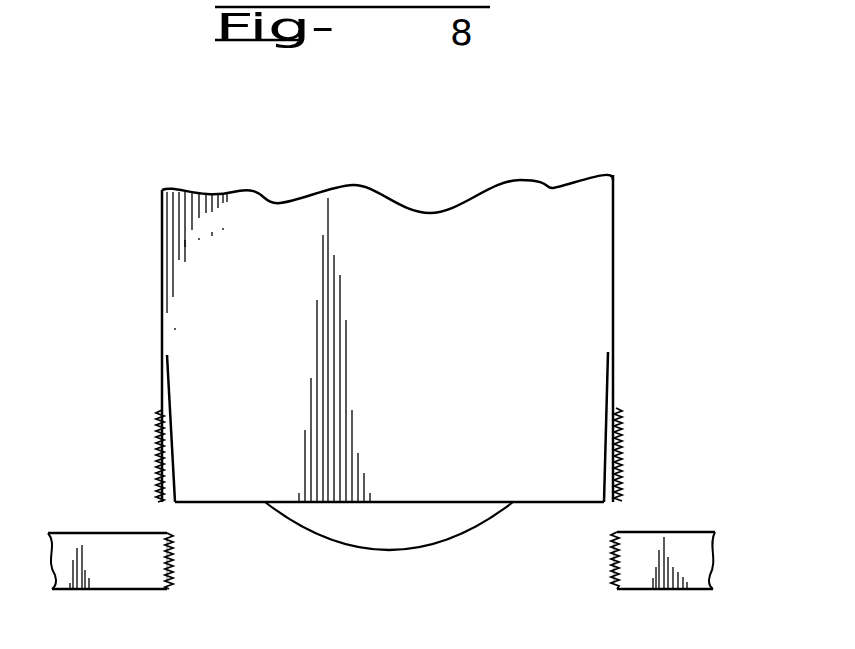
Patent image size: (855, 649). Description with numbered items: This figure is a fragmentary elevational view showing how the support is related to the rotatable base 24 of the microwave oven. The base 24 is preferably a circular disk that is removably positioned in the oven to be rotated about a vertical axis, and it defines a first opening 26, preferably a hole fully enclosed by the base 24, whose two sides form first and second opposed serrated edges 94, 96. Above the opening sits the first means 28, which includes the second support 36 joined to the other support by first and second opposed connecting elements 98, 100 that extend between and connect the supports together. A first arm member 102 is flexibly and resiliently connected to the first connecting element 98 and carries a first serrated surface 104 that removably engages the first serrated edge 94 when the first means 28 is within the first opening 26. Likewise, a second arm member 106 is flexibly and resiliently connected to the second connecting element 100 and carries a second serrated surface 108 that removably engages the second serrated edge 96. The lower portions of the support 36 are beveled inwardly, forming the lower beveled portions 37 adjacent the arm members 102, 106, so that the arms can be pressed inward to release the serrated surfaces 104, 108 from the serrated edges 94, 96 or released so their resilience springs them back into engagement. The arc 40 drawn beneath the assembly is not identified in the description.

The first means 28 is at (522, 153).
The second connecting element 100 is at (614, 202).
The second support 36 is at (588, 260).
The first connecting element 98 is at (160, 243).
The first arm member 102 is at (160, 365).
The first serrated surface 104 is at (165, 460).
The lower beveled portions 37 is at (175, 465).
The second arm member 106 is at (617, 370).
The second serrated surface 108 is at (620, 458).
The bottom arc 40 is at (348, 547).
The base 24 is at (91, 545).
The first serrated edge 94 is at (174, 550).
The first opening 26 is at (174, 575).
The second serrated edge 96 is at (613, 548).